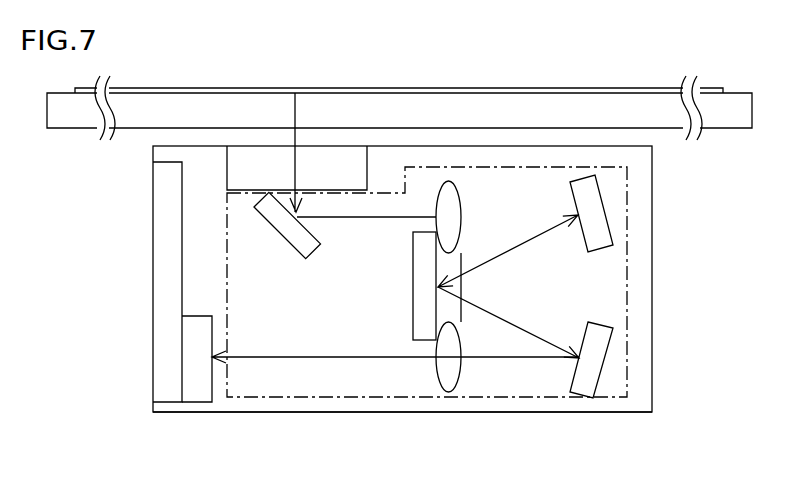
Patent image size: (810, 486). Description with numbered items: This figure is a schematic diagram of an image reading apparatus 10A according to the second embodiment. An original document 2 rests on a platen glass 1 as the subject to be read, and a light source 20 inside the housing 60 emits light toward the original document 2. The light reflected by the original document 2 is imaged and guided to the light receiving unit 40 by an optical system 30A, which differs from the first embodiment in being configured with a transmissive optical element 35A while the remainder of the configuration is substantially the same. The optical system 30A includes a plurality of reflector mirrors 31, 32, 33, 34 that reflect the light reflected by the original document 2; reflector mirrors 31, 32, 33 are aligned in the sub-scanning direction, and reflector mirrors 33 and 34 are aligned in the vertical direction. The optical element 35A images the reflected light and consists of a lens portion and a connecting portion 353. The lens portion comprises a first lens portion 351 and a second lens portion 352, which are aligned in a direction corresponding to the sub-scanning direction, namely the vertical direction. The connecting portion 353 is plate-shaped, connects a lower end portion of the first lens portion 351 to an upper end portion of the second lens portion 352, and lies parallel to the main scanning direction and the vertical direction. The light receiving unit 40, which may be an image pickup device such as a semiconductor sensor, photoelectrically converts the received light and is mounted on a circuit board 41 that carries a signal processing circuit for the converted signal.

The platen glass 1 is at (742, 108).
The original document 2 is at (406, 90).
The image reading apparatus 10A is at (118, 206).
The light source 20 is at (337, 160).
The optical system 30A is at (328, 398).
The reflector mirror 31 is at (262, 192).
The reflector mirror 32 is at (595, 216).
The reflector mirror 33 is at (425, 315).
The reflector mirror 34 is at (595, 358).
The optical element 35A is at (487, 251).
The first lens portion 351 is at (449, 193).
The second lens portion 352 is at (448, 382).
The connecting portion 353 is at (460, 312).
The light receiving unit 40 is at (196, 392).
The circuit board 41 is at (165, 283).
The housing 60 is at (282, 413).